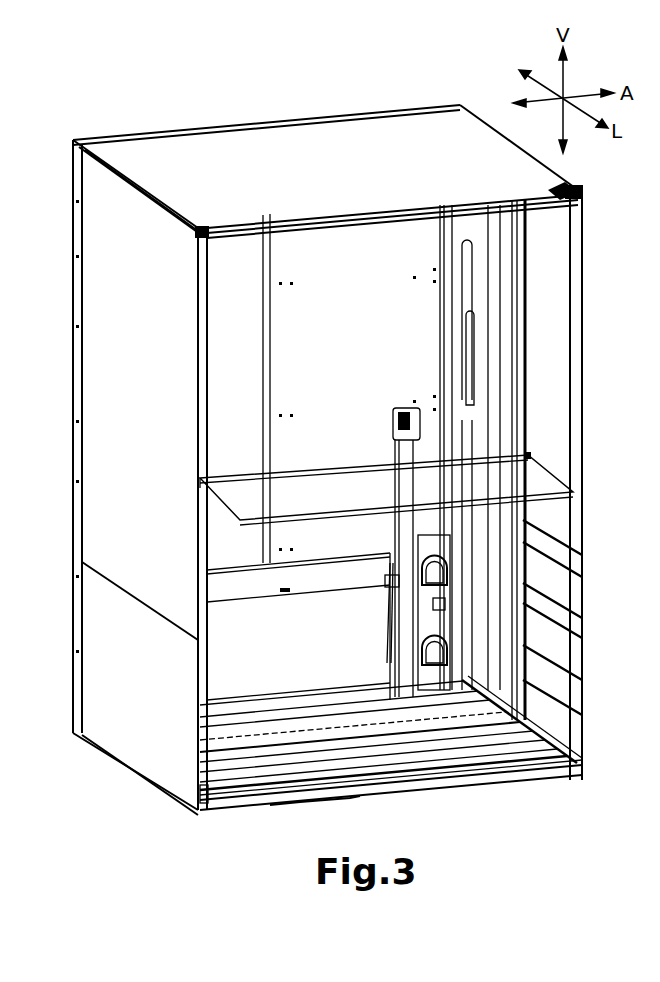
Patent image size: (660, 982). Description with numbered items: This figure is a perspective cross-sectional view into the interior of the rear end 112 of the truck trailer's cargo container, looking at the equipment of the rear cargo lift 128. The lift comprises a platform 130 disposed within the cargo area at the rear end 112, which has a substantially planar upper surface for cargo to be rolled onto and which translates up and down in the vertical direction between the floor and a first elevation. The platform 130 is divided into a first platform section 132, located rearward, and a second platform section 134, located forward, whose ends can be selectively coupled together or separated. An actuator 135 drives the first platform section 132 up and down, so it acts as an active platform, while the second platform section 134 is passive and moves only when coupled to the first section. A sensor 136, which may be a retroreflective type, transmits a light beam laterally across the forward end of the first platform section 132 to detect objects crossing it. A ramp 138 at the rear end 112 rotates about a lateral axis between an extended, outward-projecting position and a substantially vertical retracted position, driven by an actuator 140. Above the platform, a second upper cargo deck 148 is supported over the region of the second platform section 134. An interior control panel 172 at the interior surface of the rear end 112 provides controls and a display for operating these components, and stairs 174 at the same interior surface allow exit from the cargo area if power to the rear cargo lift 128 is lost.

The rear end 112 is at (302, 115).
The actuator 135 is at (508, 322).
The second upper cargo deck 148 is at (430, 483).
The interior control panel 172 is at (396, 420).
The actuator 140 is at (392, 625).
The ramp 138 is at (243, 663).
The stairs 174 is at (447, 577).
The sensor 136 is at (547, 735).
The first platform section 132 is at (262, 730).
The rear cargo lift 128 is at (363, 765).
The platform 130 is at (437, 760).
The second platform section 134 is at (545, 785).